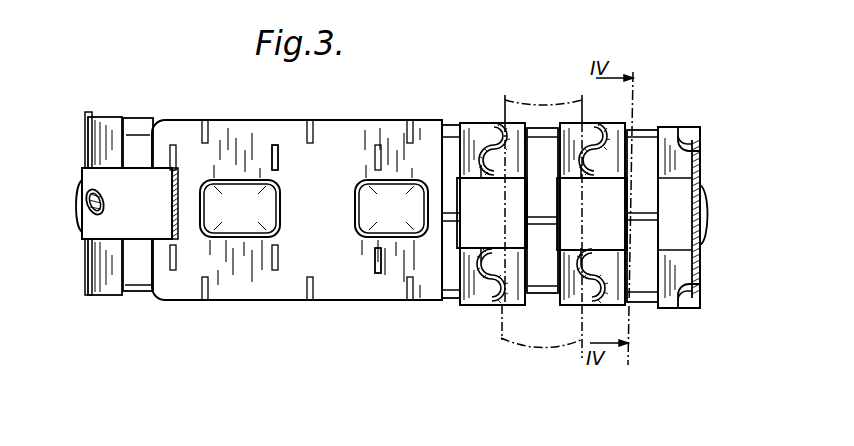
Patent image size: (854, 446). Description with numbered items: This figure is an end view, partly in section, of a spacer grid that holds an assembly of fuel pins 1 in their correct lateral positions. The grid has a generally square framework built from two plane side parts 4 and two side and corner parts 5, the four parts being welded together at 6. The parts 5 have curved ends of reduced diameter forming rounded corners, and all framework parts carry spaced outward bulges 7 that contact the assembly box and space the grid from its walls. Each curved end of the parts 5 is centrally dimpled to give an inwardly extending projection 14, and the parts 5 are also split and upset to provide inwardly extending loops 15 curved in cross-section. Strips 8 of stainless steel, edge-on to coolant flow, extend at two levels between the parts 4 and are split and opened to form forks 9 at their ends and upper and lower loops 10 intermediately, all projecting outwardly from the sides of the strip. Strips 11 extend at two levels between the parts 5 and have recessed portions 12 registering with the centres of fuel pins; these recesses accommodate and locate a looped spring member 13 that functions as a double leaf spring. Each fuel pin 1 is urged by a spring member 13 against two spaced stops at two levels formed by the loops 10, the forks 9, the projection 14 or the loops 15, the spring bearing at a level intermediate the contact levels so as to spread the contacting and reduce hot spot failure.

The fuel pin 1 is at (500, 112).
The plane side part 4 is at (320, 217).
The side and corner part 5 is at (88, 132).
The weld 6 is at (180, 190).
The outward bulge 7 is at (240, 195).
The strip 8 is at (604, 165).
The fork 9 is at (278, 152).
The loop 10 is at (590, 170).
The strip 11 is at (108, 118).
The recessed portion 12 is at (668, 138).
The looped spring member 13 is at (142, 128).
The projection 14 is at (95, 215).
The loop 15 is at (696, 130).